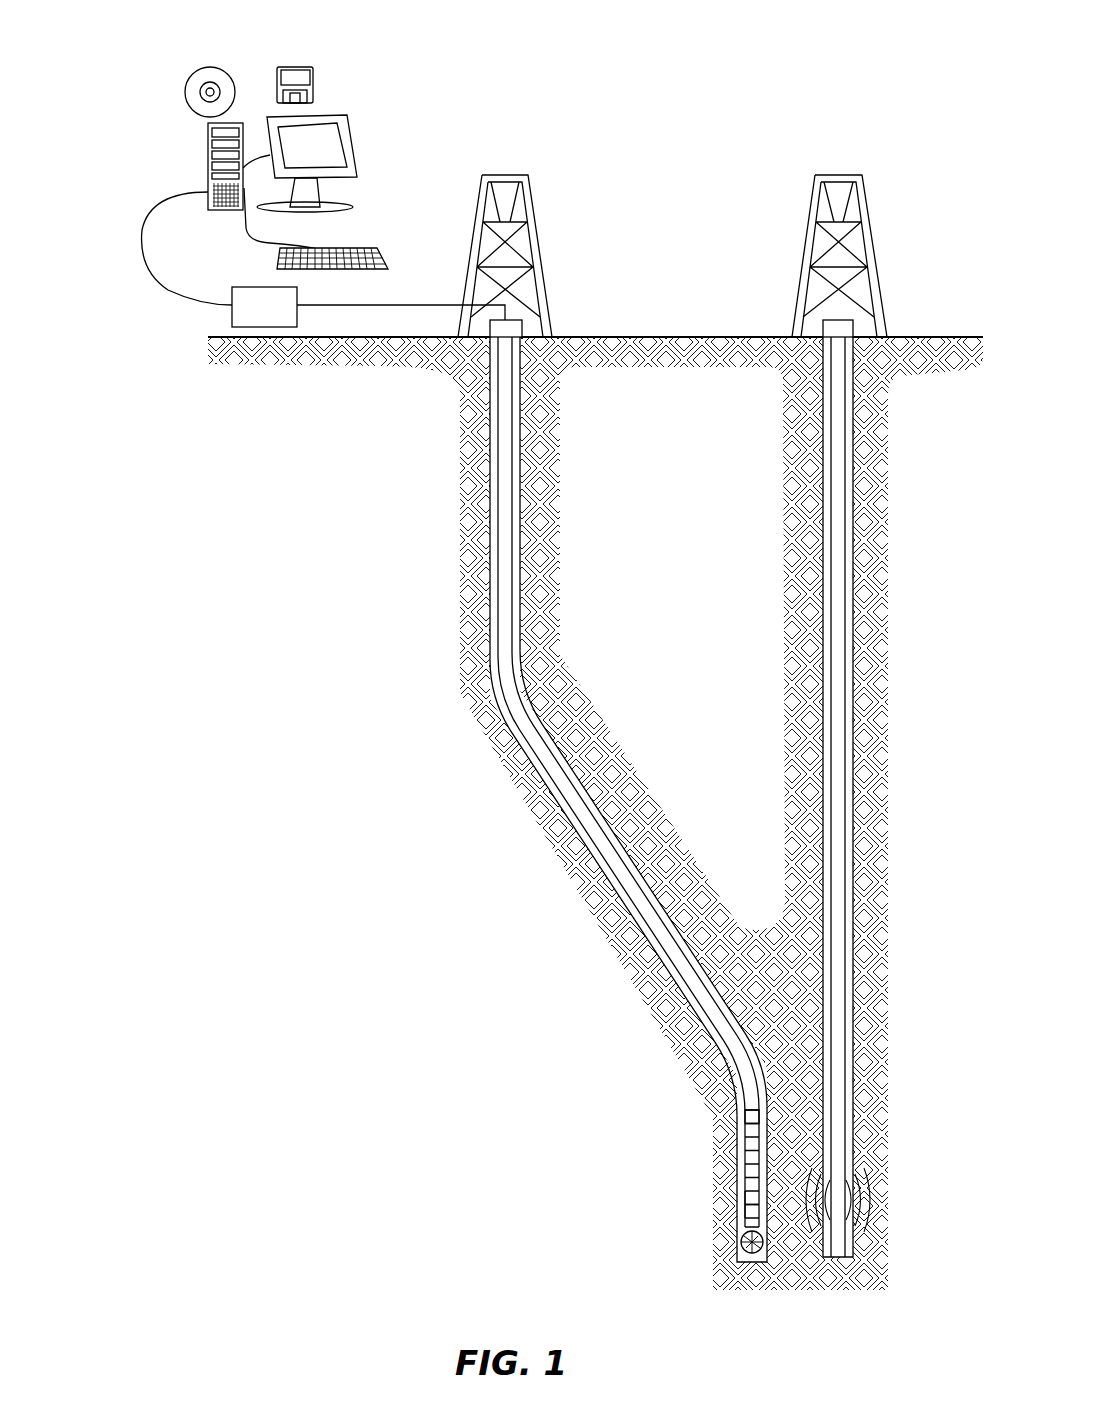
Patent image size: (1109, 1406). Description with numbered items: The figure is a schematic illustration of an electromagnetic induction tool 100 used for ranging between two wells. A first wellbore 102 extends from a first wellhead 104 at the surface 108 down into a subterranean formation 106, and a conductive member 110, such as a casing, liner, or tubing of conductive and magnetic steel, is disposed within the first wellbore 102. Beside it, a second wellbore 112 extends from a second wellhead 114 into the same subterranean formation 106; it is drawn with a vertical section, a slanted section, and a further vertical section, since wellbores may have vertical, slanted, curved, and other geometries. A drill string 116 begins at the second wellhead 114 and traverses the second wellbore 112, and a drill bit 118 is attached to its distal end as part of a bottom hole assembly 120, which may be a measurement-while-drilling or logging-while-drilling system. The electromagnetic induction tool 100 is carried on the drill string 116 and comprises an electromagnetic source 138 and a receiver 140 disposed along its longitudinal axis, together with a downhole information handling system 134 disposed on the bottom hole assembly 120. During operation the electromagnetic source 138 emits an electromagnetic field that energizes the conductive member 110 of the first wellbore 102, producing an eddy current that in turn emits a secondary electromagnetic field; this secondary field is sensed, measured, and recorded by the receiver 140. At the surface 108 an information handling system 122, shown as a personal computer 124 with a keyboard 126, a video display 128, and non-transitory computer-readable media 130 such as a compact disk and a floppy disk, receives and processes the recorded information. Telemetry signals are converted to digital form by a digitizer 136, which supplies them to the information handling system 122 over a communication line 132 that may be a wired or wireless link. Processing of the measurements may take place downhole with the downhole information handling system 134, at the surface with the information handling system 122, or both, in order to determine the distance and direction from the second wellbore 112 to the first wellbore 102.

The electromagnetic induction tool 100 is at (579, 817).
The first wellbore 102 is at (882, 797).
The first wellhead 104 is at (855, 328).
The subterranean formation 106 is at (793, 990).
The surface 108 is at (677, 337).
The conductive member 110 is at (847, 657).
The second wellbore 112 is at (490, 480).
The second wellhead 114 is at (522, 328).
The drill string 116 is at (547, 755).
The drill bit 118 is at (747, 1247).
The bottom hole assembly 120 is at (687, 1191).
The information handling system 122 is at (287, 163).
The personal computer 124 is at (208, 150).
The keyboard 126 is at (388, 258).
The video display 128 is at (355, 145).
The non-transitory computer-readable media 130 is at (296, 66).
The communication line 132 is at (140, 262).
The downhole information handling system 134 is at (748, 1115).
The digitizer 136 is at (285, 321).
The electromagnetic source 138 is at (747, 1135).
The receiver 140 is at (745, 1207).